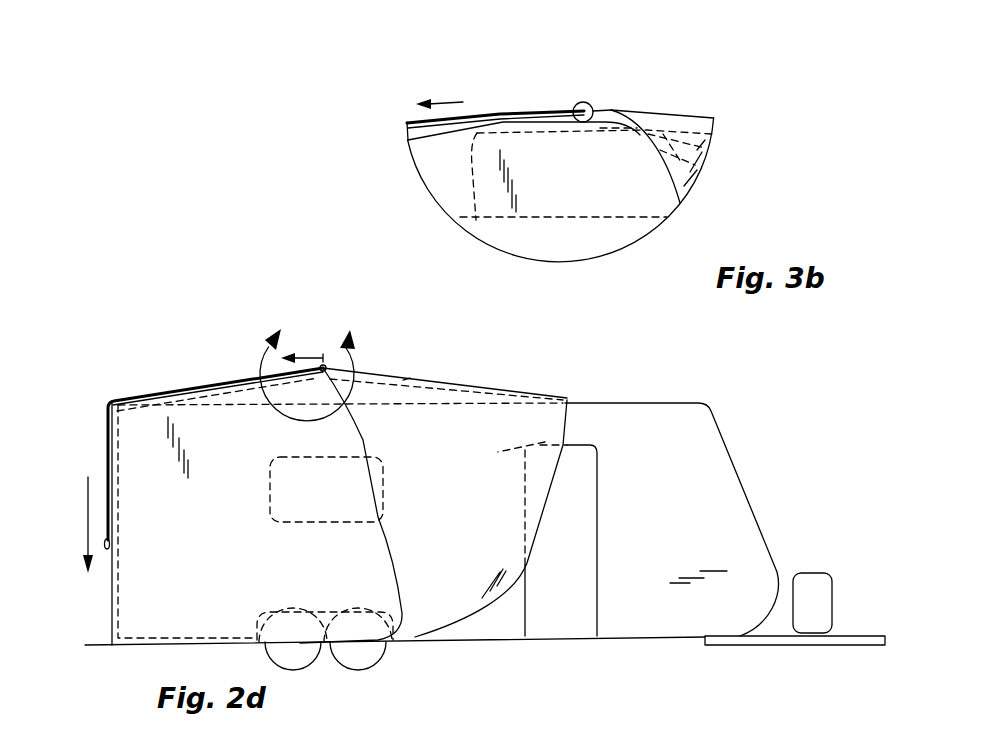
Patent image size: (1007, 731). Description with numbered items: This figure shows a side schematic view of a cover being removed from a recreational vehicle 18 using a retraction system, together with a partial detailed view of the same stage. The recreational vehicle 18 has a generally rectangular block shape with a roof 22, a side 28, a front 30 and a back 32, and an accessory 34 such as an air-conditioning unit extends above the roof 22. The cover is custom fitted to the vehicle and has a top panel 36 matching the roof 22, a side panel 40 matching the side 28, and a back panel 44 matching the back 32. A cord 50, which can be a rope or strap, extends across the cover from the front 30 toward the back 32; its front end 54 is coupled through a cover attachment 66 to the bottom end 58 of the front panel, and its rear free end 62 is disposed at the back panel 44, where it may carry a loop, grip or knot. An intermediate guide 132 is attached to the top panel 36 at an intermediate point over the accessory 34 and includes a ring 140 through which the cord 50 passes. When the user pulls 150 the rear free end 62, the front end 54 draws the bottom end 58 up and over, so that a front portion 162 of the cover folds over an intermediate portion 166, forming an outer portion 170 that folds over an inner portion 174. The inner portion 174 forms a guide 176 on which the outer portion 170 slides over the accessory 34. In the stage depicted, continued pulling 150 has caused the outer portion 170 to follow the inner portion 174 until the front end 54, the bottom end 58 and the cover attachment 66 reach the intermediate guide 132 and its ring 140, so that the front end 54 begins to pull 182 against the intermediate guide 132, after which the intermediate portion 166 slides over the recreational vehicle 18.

In FIG. 2D, the recreational vehicle 18 is at (705, 612).
In FIG. 3B, the recreational vehicle 18 is at (538, 243).
In FIG. 2D, the roof 22 is at (165, 400).
In FIG. 3B, the roof 22 is at (468, 244).
In FIG. 2D, the side 28 is at (500, 618).
In FIG. 2D, the front 30 is at (738, 467).
In FIG. 2D, the back 32 is at (102, 593).
In FIG. 2D, the accessory 34 is at (244, 408).
In FIG. 3B, the accessory 34 is at (473, 188).
In FIG. 2D, the top panel 36 is at (190, 385).
In FIG. 2D, the side panel 40 is at (417, 597).
In FIG. 2D, the back panel 44 is at (112, 643).
In FIG. 2D, the cord 50 is at (130, 396).
In FIG. 3B, the cord 50 is at (478, 114).
In FIG. 3B, the front end 54 is at (514, 110).
In FIG. 3B, the bottom end 58 is at (613, 110).
In FIG. 2D, the rear free end 62 is at (102, 422).
In FIG. 2D, the cover attachment 66 is at (330, 373).
In FIG. 3B, the cover attachment 66 is at (611, 110).
In FIG. 2D, the intermediate guide 132 is at (322, 366).
In FIG. 3B, the intermediate guide 132 is at (573, 106).
In FIG. 3B, the ring 140 is at (585, 102).
In FIG. 2D, the pull 150 is at (87, 510).
In FIG. 2D, the front portion 162 is at (403, 380).
In FIG. 2D, the intermediate portion 166 is at (437, 388).
In FIG. 2D, the outer portion 170 is at (458, 422).
In FIG. 2D, the inner portion 174 is at (545, 427).
In FIG. 3B, the guide 176 is at (708, 180).
In FIG. 2D, the pull 182 is at (305, 357).